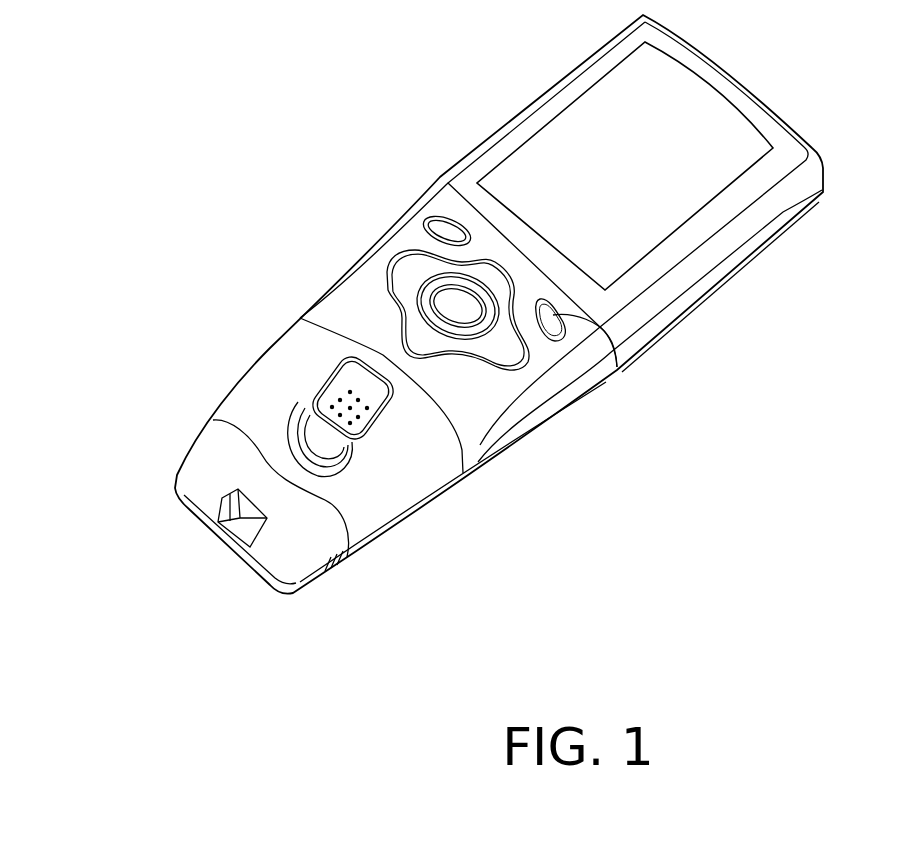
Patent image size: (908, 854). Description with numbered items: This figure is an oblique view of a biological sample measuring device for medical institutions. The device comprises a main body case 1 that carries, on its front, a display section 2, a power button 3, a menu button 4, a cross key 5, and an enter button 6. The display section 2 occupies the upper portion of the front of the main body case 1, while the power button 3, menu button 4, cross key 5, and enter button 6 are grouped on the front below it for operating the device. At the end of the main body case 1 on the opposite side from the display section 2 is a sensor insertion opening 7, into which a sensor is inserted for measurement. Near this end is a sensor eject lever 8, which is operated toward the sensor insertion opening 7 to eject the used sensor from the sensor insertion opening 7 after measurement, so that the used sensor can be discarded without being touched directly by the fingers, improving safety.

The main body case 1 is at (688, 288).
The display section 2 is at (678, 187).
The power button 3 is at (617, 367).
The menu button 4 is at (447, 232).
The cross key 5 is at (490, 275).
The enter button 6 is at (450, 307).
The sensor insertion opening 7 is at (242, 531).
The sensor eject lever 8 is at (313, 428).